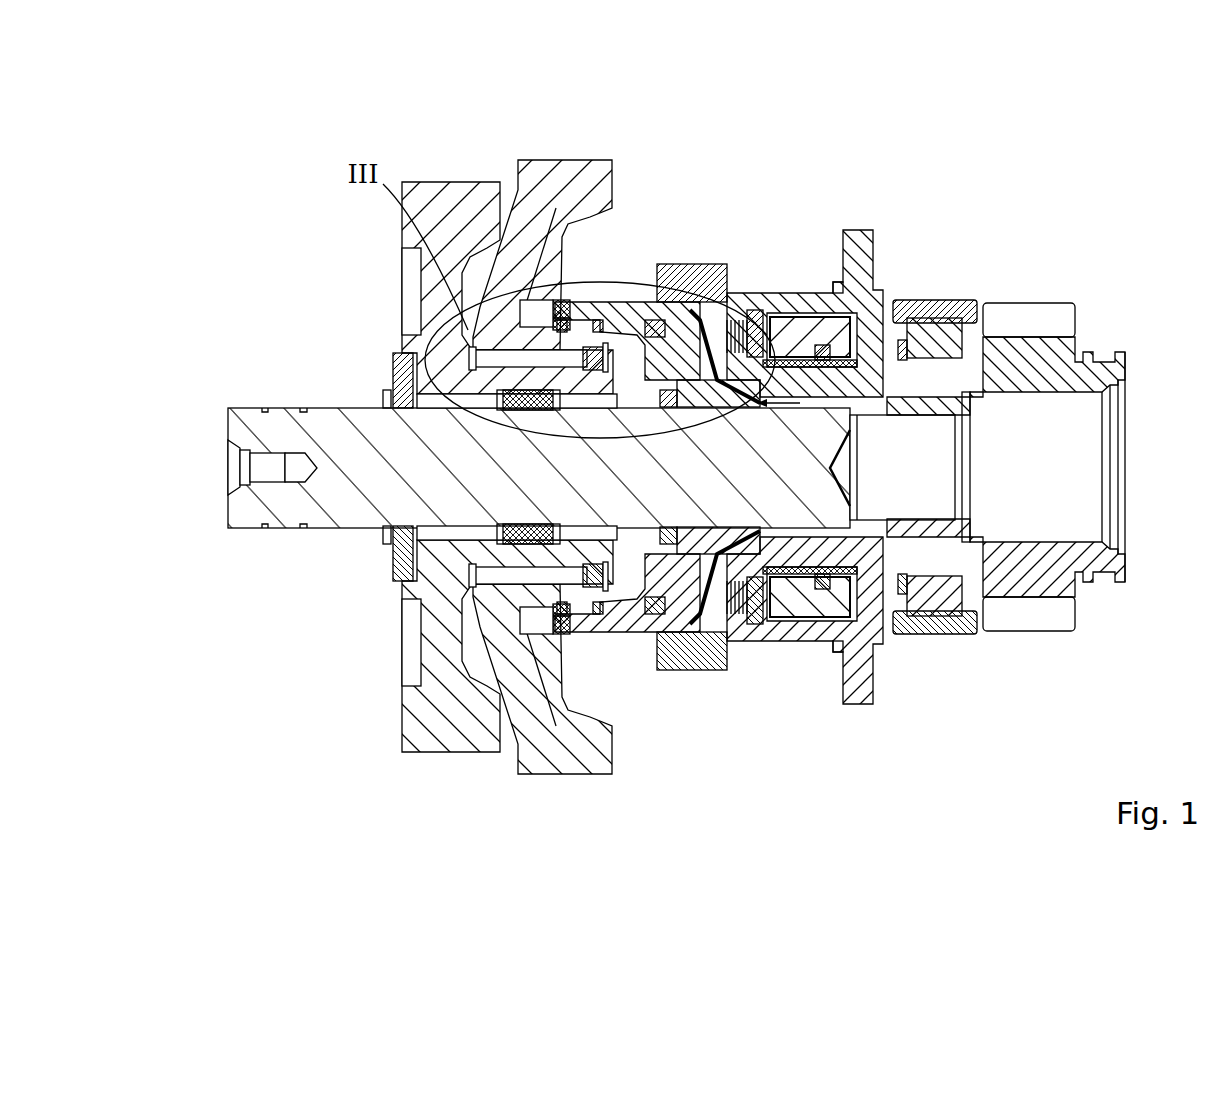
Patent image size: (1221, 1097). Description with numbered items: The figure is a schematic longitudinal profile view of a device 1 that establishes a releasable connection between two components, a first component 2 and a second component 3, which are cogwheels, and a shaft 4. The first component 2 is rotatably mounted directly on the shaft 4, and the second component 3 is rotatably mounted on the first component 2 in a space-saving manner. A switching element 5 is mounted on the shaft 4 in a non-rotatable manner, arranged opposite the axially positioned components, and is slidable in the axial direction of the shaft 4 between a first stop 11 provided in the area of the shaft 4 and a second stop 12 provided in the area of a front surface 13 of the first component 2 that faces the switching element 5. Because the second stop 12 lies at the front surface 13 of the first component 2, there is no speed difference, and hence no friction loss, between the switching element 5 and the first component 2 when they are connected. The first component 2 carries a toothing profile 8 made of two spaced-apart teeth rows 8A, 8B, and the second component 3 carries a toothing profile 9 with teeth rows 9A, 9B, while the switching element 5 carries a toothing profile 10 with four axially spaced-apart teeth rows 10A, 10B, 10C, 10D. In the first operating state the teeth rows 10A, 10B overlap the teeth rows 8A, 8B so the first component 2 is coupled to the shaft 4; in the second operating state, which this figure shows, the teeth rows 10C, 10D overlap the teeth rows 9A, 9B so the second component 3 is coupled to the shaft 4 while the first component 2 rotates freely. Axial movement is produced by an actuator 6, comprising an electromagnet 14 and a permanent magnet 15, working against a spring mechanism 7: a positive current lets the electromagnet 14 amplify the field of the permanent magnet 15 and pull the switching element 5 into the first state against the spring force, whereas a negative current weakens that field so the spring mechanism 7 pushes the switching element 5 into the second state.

The device 1 is at (800, 276).
The first component 2 is at (438, 217).
The second component 3 is at (517, 228).
The shaft 4 is at (340, 445).
The switching element 5 is at (642, 300).
The actuator 6 is at (812, 292).
The spring mechanism 7 is at (758, 300).
The toothing profile 8 is at (580, 565).
The teeth row 8A is at (668, 540).
The teeth row 8B is at (692, 540).
The toothing profile 9 is at (545, 328).
The teeth row 9A is at (480, 525).
The teeth row 9B is at (528, 535).
The toothing profile 10 is at (545, 318).
The teeth row 10A is at (655, 290).
The teeth row 10B is at (720, 300).
The teeth row 10C is at (550, 300).
The teeth row 10D is at (585, 330).
The first stop 11 is at (830, 410).
The second stop 12 is at (785, 640).
The front surface 13 is at (700, 266).
The electromagnet 14 is at (864, 231).
The permanent magnet 15 is at (835, 284).